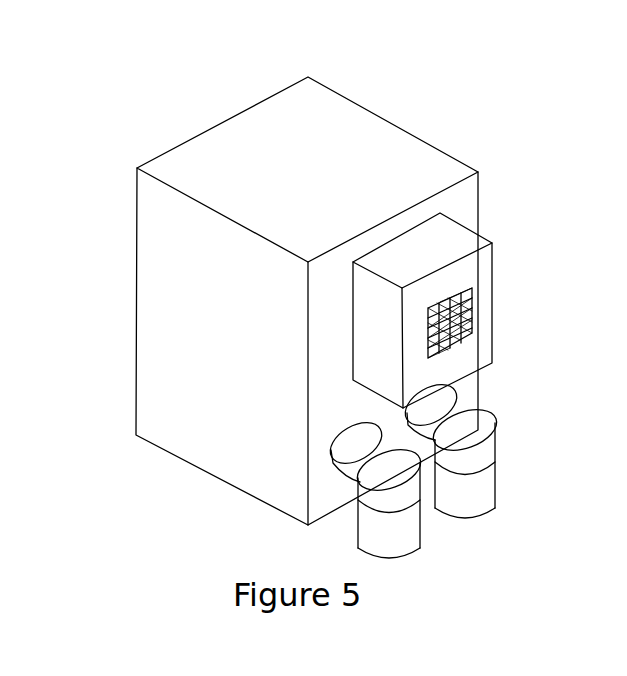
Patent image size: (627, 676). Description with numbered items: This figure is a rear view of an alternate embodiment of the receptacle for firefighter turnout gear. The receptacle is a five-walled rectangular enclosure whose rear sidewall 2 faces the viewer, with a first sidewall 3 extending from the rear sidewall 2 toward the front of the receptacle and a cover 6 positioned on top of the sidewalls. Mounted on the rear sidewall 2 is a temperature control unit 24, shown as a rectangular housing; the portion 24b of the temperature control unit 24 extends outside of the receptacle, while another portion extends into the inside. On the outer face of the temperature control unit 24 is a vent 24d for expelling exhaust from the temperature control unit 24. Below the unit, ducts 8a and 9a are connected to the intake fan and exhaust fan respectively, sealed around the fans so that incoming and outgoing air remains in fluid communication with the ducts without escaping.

The cover 6 is at (303, 320).
The first sidewall 3 is at (158, 422).
The rear sidewall 2 is at (325, 497).
The temperature control unit 24 is at (480, 308).
The portion of the temperature control unit extending outside 24b is at (463, 243).
The vent 24d is at (452, 325).
The duct 9a is at (333, 437).
The duct 8a is at (503, 410).